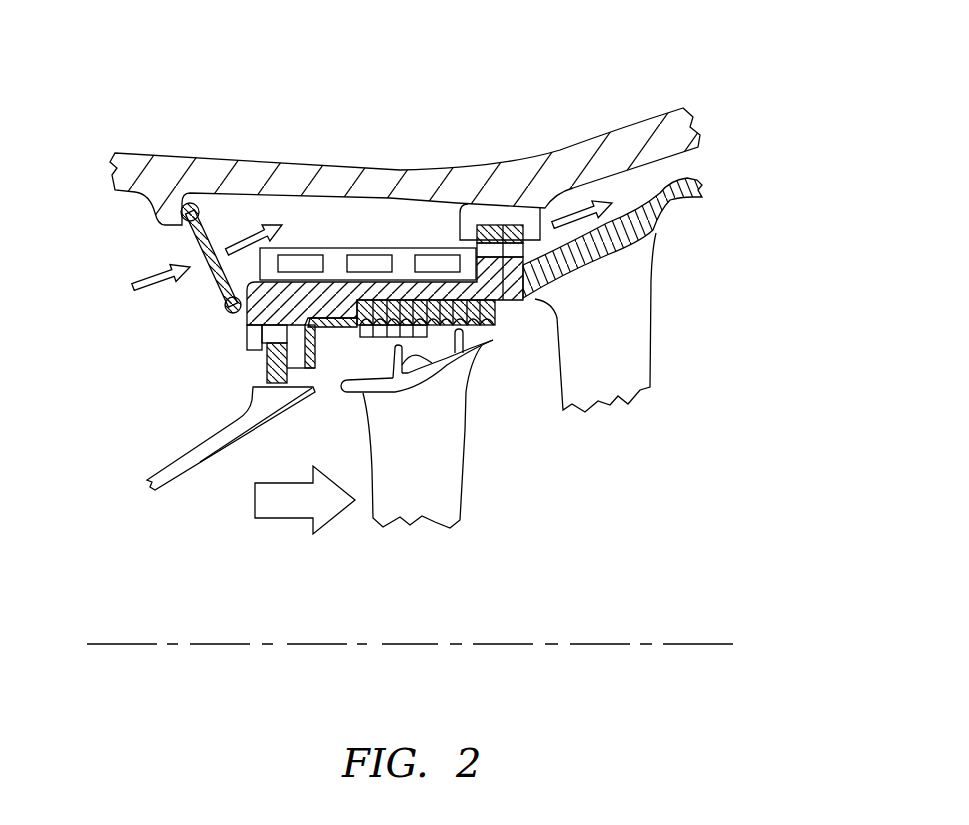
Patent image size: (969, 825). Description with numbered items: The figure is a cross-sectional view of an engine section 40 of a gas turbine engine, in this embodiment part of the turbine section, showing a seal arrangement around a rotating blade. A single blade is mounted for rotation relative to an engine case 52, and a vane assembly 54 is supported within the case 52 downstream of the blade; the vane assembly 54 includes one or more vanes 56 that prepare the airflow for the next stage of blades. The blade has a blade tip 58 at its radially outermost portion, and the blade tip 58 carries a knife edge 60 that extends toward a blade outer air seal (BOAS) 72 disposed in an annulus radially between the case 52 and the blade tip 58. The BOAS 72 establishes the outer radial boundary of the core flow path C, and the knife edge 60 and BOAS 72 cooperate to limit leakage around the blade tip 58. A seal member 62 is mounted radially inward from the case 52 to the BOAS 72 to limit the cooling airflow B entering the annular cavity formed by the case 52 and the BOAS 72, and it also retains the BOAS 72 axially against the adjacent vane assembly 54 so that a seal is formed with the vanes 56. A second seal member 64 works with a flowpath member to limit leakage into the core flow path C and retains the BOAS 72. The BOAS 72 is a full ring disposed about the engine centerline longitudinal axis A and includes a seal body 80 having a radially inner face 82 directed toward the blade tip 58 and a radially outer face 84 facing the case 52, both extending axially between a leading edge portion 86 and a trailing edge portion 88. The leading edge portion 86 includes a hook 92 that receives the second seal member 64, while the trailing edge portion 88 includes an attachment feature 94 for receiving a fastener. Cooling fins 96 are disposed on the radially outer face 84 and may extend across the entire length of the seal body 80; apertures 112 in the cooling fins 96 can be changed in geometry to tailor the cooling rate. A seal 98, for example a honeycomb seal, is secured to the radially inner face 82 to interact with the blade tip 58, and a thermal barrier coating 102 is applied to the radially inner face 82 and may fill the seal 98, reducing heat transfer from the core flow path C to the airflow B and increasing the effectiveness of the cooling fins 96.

The engine section 40 is at (216, 73).
The engine case 52 is at (611, 131).
The vane assembly 54 is at (219, 464).
The vane 56 is at (583, 381).
The blade tip 58 is at (486, 350).
The knife edge 60 is at (455, 353).
The seal member 62 is at (222, 303).
The second seal member 64 is at (272, 372).
The blade outer air seal (BOAS) 72 is at (335, 282).
The seal body 80 is at (390, 250).
The radially inner face 82 is at (340, 326).
The radially outer face 84 is at (453, 242).
The leading edge portion 86 is at (266, 334).
The trailing edge portion 88 is at (612, 242).
The hook 92 is at (250, 333).
The attachment feature 94 is at (478, 232).
The cooling fins 96 is at (410, 282).
The seal 98 is at (528, 320).
The thermal barrier coating 102 is at (398, 350).
The apertures 112 is at (295, 263).
The engine centerline longitudinal axis A is at (713, 640).
The cooling airflow B is at (128, 278).
The core flow path C is at (305, 500).